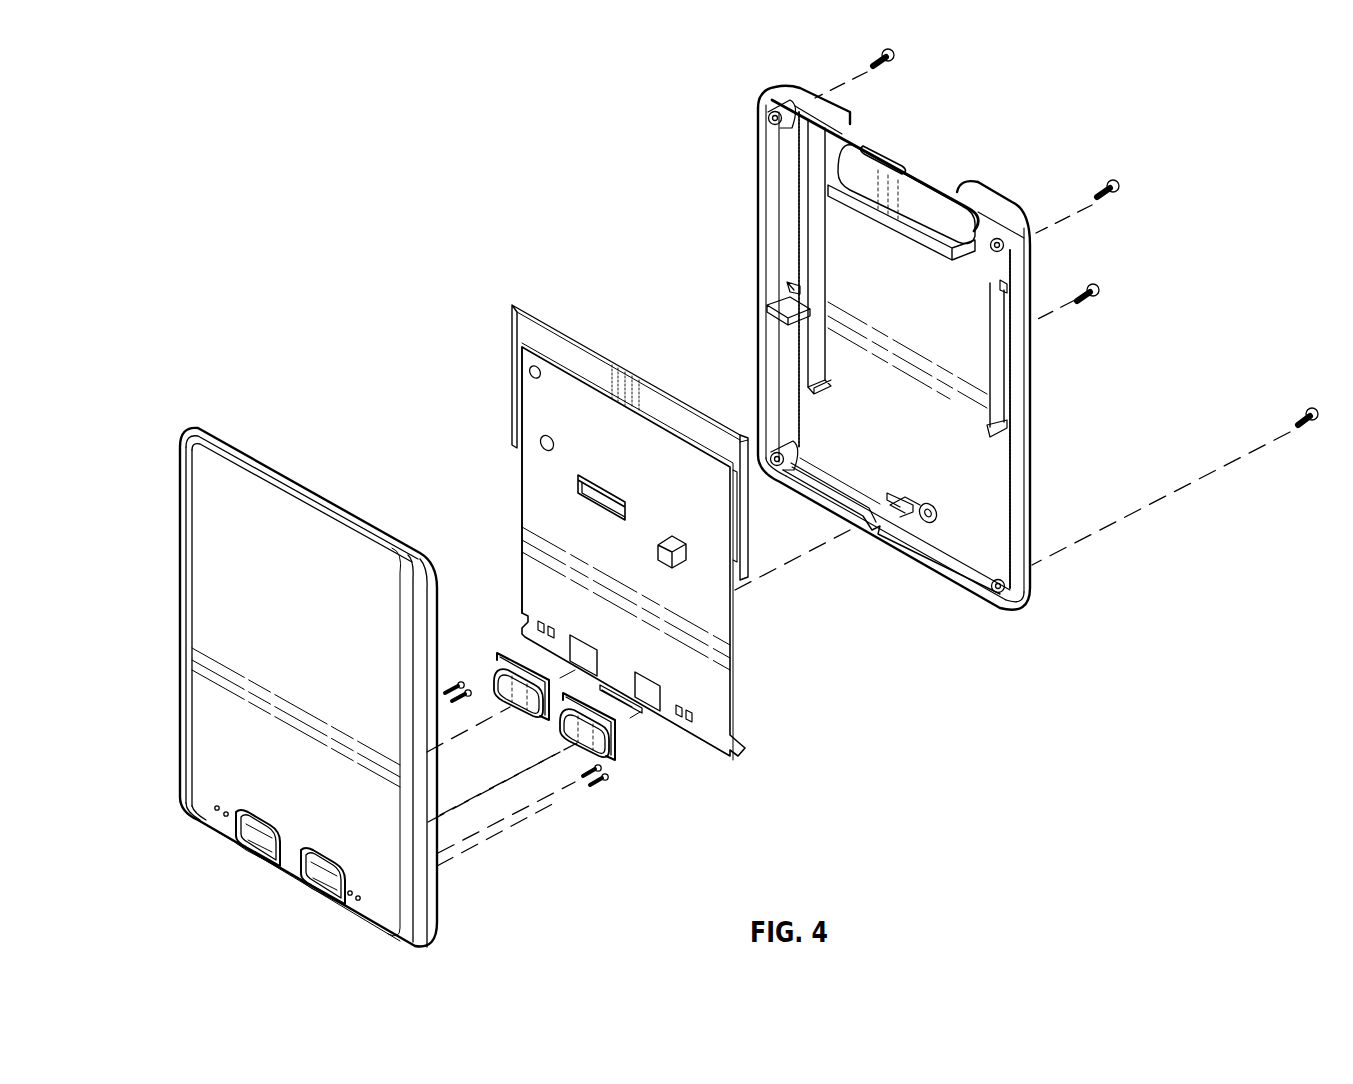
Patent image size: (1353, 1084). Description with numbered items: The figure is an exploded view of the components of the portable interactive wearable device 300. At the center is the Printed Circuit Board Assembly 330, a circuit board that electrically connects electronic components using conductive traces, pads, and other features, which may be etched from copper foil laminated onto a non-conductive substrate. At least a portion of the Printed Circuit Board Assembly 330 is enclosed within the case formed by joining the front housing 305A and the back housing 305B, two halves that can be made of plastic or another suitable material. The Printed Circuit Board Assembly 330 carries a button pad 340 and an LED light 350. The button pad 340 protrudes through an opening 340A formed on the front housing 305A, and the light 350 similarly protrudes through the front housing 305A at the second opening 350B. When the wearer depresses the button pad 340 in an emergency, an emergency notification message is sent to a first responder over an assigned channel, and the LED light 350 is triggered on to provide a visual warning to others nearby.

The portable interactive wearable device 300 is at (537, 232).
The front housing 305A is at (213, 592).
The back housing 305B is at (1030, 380).
The Printed Circuit Board Assembly 330 is at (543, 405).
The button pad 340 is at (525, 716).
The LED light 350 is at (590, 745).
The opening 340A is at (232, 840).
The second button opening 350B is at (298, 880).